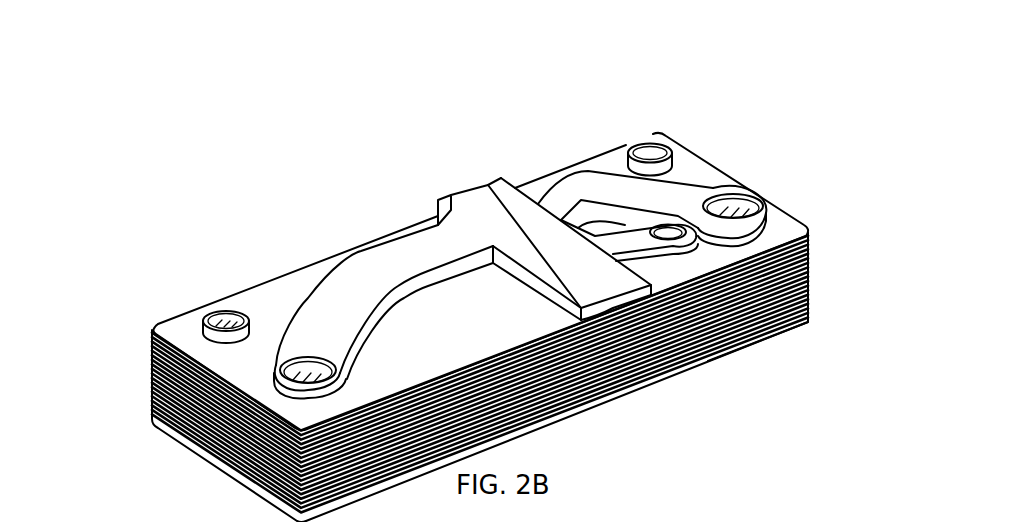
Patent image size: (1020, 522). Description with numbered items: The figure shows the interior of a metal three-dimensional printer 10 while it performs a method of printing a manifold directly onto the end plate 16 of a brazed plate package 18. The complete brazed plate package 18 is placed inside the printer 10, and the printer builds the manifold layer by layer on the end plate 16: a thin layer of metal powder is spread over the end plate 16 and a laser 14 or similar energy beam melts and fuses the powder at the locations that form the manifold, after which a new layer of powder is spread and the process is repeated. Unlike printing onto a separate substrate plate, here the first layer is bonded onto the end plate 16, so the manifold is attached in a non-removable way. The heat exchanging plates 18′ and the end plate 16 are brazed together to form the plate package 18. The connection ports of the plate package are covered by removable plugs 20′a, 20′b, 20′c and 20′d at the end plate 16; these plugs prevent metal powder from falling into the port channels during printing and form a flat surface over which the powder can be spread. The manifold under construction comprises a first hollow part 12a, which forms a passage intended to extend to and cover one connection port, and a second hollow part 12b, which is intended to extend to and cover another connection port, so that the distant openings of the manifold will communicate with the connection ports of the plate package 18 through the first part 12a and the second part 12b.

The metal 3D printer 10 is at (775, 173).
The first hollow part of the manifold 12a is at (350, 262).
The second hollow part of the manifold 12b is at (557, 186).
The laser 14 is at (408, 262).
The end plate 16 is at (473, 296).
The plate package 18 is at (121, 297).
The heat exchanging plates 18′ is at (806, 268).
The removable plug 20′a is at (302, 360).
The removable plug 20′b is at (723, 196).
The removable plug 20′c is at (216, 306).
The removable plug 20′d is at (640, 143).